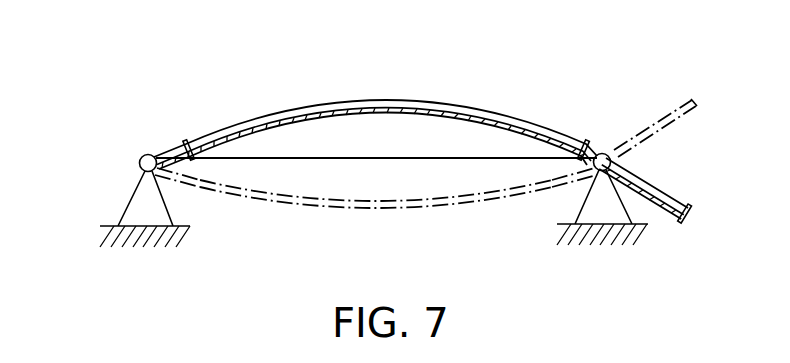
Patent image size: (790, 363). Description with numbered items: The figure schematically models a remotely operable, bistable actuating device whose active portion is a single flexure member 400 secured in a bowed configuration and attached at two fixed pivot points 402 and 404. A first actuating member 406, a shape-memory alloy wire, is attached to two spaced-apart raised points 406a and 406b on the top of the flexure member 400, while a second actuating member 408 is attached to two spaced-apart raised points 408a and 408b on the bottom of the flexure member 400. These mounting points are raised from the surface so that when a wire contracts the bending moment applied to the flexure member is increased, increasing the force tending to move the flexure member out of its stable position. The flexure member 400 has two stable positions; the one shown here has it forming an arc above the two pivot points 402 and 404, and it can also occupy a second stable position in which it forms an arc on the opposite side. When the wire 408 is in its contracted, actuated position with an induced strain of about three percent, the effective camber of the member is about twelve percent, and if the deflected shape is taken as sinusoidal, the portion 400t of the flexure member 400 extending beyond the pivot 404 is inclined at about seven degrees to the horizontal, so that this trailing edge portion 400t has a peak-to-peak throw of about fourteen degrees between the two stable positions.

The flexure member 400 is at (166, 151).
The trailing edge portion of the flexure member 400t is at (678, 218).
The fixed pivot point 402 is at (140, 162).
The fixed pivot point 404 is at (603, 153).
The first actuating member 406 is at (332, 105).
The raised point 406a is at (185, 139).
The raised point 406b is at (583, 139).
The second actuating member 408 is at (353, 159).
The raised point 408a is at (188, 153).
The raised point 408b is at (578, 168).